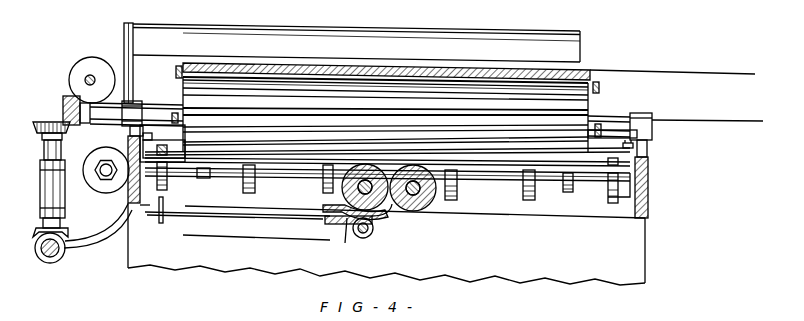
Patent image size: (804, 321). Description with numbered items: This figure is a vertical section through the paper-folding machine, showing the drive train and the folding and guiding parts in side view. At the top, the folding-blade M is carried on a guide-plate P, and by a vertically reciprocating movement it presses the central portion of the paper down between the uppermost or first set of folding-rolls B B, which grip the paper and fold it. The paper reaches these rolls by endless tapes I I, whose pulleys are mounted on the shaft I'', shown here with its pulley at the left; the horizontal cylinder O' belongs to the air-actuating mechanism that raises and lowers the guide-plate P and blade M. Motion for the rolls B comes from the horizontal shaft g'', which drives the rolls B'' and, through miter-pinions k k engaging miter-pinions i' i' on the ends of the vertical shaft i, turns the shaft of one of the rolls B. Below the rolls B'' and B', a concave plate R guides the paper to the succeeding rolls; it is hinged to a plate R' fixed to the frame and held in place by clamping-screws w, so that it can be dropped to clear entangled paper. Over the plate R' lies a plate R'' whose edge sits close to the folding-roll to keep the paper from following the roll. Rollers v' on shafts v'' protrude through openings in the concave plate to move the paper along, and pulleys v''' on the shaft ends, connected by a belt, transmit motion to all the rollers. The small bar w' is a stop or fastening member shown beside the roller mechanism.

The folding-blade M is at (356, 43).
The guide-plate P is at (133, 84).
The endless tapes I is at (467, 98).
The folding-rolls B is at (385, 114).
The shaft I'' is at (92, 80).
The miter-pinions k is at (68, 109).
The miter-pinions i' is at (43, 175).
The vertical shaft i is at (44, 184).
The horizontal shaft g'' is at (72, 240).
The secondary cylinder O' is at (100, 166).
The stop bar w' is at (159, 217).
The pulleys v''' is at (387, 190).
The rollers v' is at (385, 206).
The shafts v'' is at (515, 185).
The folding-rolls B'' is at (365, 187).
The folding-rolls B' is at (413, 188).
The plate R'' is at (347, 206).
The plate R' is at (335, 226).
The concave plate R is at (387, 219).
The clamping-screws w is at (265, 237).